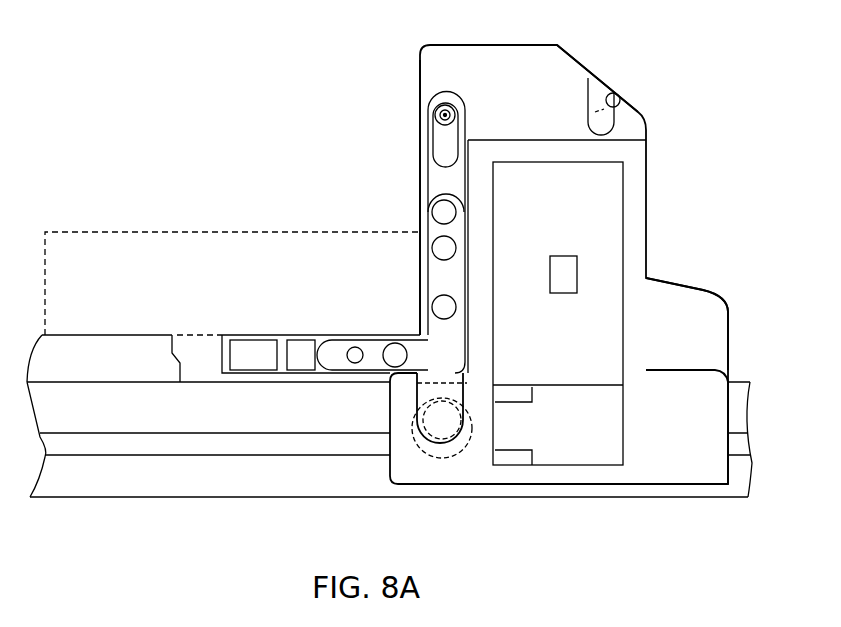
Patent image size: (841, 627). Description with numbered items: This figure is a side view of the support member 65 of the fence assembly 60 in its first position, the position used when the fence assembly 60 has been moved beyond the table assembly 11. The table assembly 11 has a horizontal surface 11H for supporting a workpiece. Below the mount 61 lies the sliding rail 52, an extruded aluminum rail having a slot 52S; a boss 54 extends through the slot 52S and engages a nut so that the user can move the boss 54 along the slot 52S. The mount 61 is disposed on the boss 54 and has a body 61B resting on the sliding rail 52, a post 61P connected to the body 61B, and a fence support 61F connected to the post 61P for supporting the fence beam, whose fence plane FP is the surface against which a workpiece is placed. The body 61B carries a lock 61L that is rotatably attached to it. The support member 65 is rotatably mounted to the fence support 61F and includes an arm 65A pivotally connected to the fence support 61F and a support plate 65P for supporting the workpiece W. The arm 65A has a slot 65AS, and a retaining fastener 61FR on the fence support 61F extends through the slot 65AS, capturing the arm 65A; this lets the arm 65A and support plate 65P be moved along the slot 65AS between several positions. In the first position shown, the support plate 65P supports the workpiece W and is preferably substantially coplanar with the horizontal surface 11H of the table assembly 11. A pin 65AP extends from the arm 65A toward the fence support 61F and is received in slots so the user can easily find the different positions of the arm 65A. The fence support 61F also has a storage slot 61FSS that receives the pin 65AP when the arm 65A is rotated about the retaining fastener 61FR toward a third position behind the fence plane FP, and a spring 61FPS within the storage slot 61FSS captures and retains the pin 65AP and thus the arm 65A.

The fence assembly 60 is at (676, 189).
The mount 61 is at (703, 307).
The fence support 61F is at (535, 62).
The storage slot 61FSS is at (597, 88).
The spring 61FPS is at (603, 123).
The pin 65AP is at (605, 124).
The fence plane FP is at (420, 75).
The retaining fastener 61FR is at (440, 114).
The slot 65AS is at (445, 153).
The support member 65 is at (250, 325).
The support plate 65P is at (285, 340).
The arm 65A is at (373, 350).
The post 61P is at (605, 268).
The lock 61L is at (567, 447).
The body 61B is at (668, 470).
The boss 54 is at (440, 458).
The workpiece W is at (110, 228).
The table assembly 11 is at (70, 347).
The horizontal surface 11H is at (118, 333).
The sliding rail 52 is at (110, 482).
The slot 52S is at (188, 445).